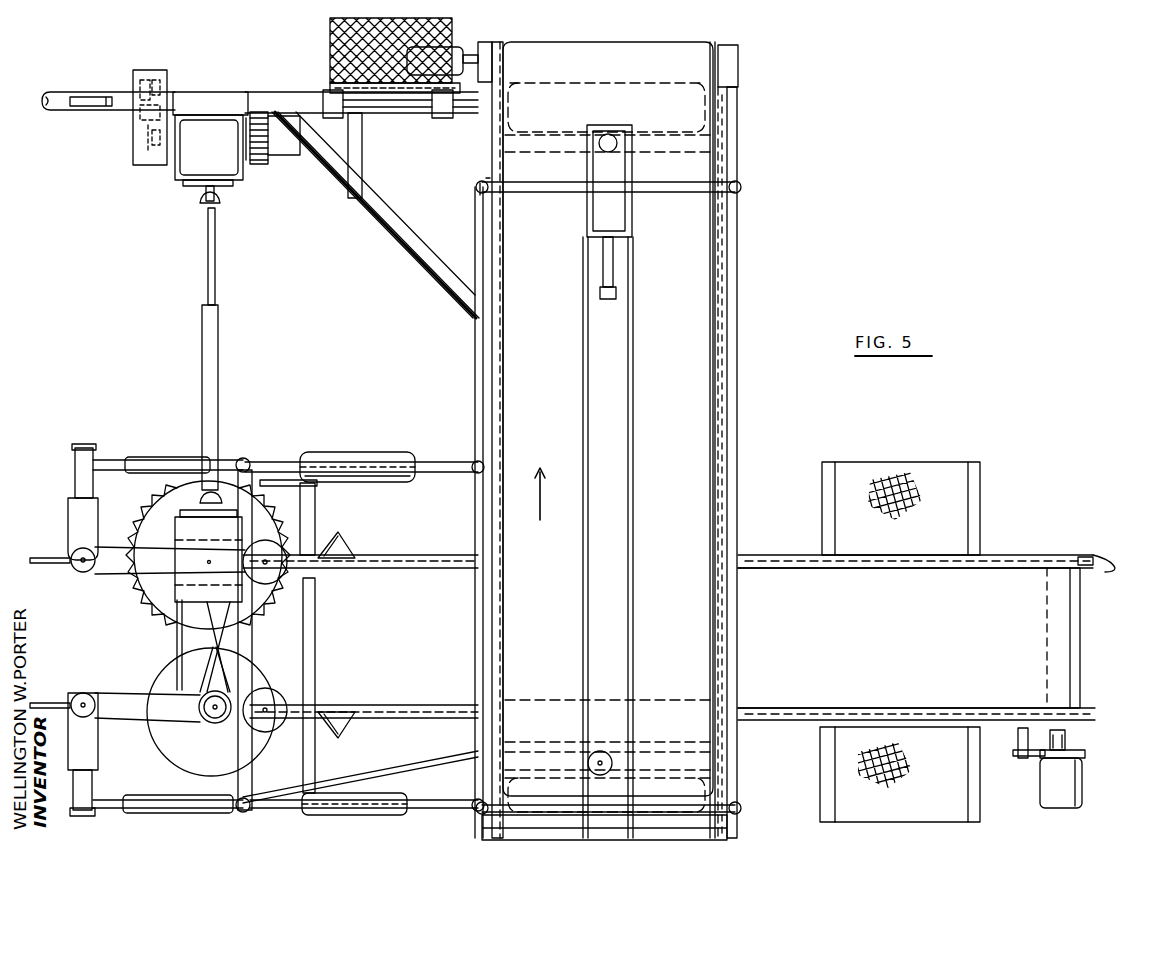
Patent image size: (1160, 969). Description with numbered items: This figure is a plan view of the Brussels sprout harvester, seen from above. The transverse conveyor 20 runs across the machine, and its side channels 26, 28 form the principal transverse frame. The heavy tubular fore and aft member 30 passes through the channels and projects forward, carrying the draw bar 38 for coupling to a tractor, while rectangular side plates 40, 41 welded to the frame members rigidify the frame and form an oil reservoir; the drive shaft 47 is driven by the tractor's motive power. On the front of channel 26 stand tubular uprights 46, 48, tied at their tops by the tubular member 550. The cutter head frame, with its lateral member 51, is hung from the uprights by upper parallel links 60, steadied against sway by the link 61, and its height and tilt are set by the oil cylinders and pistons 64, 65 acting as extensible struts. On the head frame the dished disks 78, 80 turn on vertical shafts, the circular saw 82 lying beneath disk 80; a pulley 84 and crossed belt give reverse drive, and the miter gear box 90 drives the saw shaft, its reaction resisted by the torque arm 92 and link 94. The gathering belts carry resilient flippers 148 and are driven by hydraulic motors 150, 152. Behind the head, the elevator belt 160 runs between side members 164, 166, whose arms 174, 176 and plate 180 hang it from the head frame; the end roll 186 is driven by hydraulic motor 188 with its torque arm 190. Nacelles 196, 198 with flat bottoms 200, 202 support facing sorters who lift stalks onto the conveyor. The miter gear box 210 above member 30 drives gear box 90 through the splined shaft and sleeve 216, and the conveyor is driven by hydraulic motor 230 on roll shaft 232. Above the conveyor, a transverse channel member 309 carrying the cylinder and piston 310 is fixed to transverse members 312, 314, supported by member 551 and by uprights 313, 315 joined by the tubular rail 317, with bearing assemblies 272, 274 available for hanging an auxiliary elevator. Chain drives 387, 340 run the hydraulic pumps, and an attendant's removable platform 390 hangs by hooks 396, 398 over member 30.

The transverse conveyor 20 is at (680, 390).
The side channel 26 is at (490, 395).
The side channel 28 is at (715, 368).
The tubular fore and aft extending member 30 is at (258, 97).
The draw bar 38 is at (58, 110).
The rectangular side plate 40 is at (480, 115).
The rectangular side plate 41 is at (417, 115).
The tubular upright 46 is at (478, 800).
The drive shaft 47 is at (92, 108).
The tubular upright 48 is at (475, 470).
The lateral member 51 is at (230, 763).
The upper parallel links 60 is at (470, 462).
The link 61 is at (378, 770).
The oil cylinder and piston 64 is at (378, 818).
The oil cylinder and piston 65 is at (372, 484).
The dished circular disk 78 is at (160, 672).
The dished circular disk 80 is at (160, 590).
The circular saw 82 is at (143, 522).
The pulley 84 is at (200, 722).
The miter gear box 90 is at (233, 537).
The torque arm 92 is at (165, 615).
The link 94 is at (185, 637).
The flippers 148 is at (48, 557).
The hydraulic motor 150 is at (270, 692).
The hydraulic motor 152 is at (277, 573).
The elevator belt 160 is at (825, 621).
The elevator side member 164 is at (786, 728).
The elevator side member 166 is at (790, 557).
The laterally projecting arm 174 is at (315, 758).
The laterally projecting arm 176 is at (318, 523).
The forwardly projecting plate 180 is at (288, 478).
The end roll 186 is at (1102, 570).
The hydraulic motor 188 is at (1083, 780).
The torque arm 190 is at (1070, 742).
The nacelle 196 is at (912, 822).
The nacelle 198 is at (866, 462).
The flat bottom 200 is at (860, 765).
The flat bottom 202 is at (893, 483).
The miter gear box 210 is at (182, 162).
The splined shaft and sleeve 216 is at (217, 370).
The hydraulic motor 230 is at (452, 71).
The shaft 232 is at (470, 55).
The bearing assembly 272 is at (496, 58).
The bearing assembly 274 is at (740, 58).
The transverse channel member 309 is at (630, 344).
The cylinder and piston 310 is at (612, 210).
The transverse member 312 is at (700, 800).
The upright 313 is at (742, 812).
The transverse member 314 is at (700, 178).
The upright 315 is at (742, 187).
The tubular rail 317 is at (738, 340).
The chain drive 340 is at (267, 158).
The chain drive 387 is at (253, 173).
The removable platform 390 is at (330, 28).
The hook 396 is at (334, 120).
The hook 398 is at (442, 120).
The tubular member 550 is at (478, 362).
The member 551 is at (478, 185).